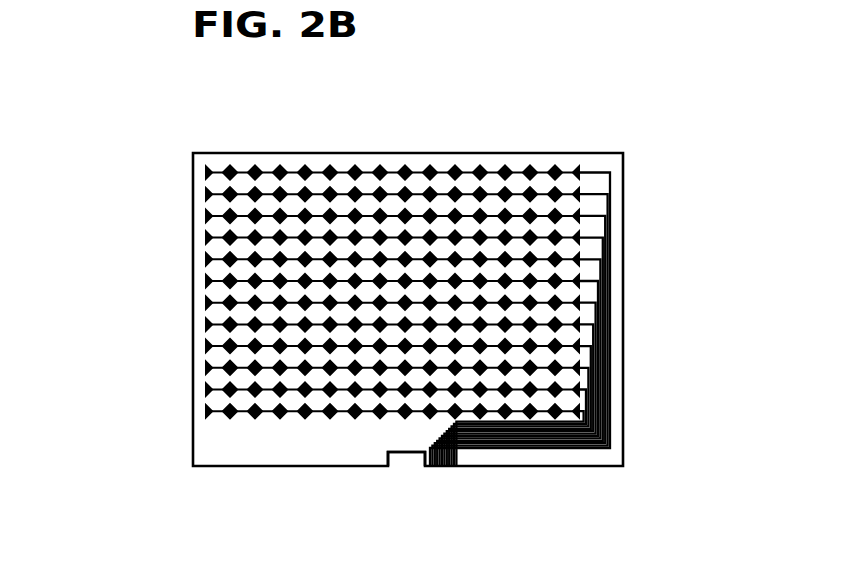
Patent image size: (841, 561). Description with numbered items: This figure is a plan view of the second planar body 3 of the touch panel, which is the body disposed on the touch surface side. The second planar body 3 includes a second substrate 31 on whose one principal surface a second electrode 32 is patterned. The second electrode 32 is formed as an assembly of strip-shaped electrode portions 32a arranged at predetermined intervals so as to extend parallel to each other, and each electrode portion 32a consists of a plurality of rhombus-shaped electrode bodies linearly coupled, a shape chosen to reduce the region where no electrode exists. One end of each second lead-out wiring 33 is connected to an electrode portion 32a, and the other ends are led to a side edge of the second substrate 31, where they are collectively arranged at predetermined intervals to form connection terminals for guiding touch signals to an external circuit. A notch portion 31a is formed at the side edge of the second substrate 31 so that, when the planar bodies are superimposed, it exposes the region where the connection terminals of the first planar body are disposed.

The second planar body 3 is at (180, 137).
The second substrate 31 is at (265, 153).
The notch portion 31a is at (408, 465).
The second electrode 32 is at (75, 160).
The electrode portion 32a is at (205, 172).
The second lead-out wiring 33 is at (611, 185).